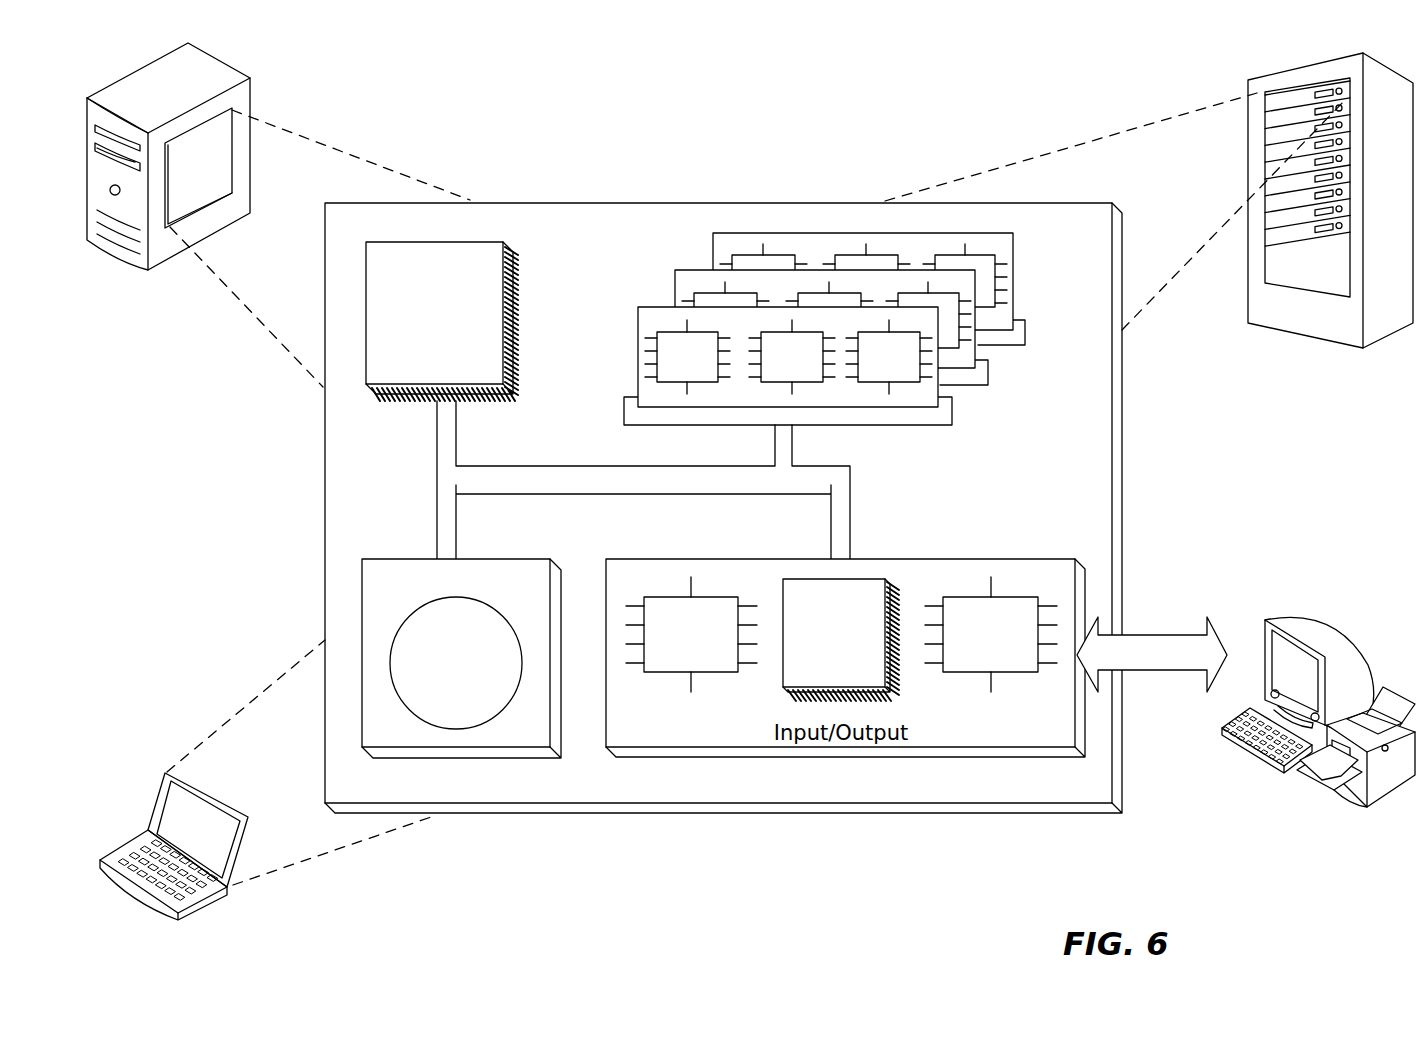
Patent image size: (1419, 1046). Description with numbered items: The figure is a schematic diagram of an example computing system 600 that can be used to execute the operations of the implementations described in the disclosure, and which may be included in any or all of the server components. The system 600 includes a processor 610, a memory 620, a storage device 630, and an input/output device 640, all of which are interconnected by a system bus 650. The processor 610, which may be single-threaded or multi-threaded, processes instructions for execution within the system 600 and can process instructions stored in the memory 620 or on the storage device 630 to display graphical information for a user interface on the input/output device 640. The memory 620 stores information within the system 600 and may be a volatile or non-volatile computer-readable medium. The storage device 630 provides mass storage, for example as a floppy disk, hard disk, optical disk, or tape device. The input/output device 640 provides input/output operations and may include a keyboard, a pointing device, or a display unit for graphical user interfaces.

The computing system 600 is at (535, 120).
The processor 610 is at (459, 378).
The memory 620 is at (1020, 383).
The storage device 630 is at (505, 741).
The input/output device 640 is at (1264, 626).
The system bus 650 is at (638, 485).